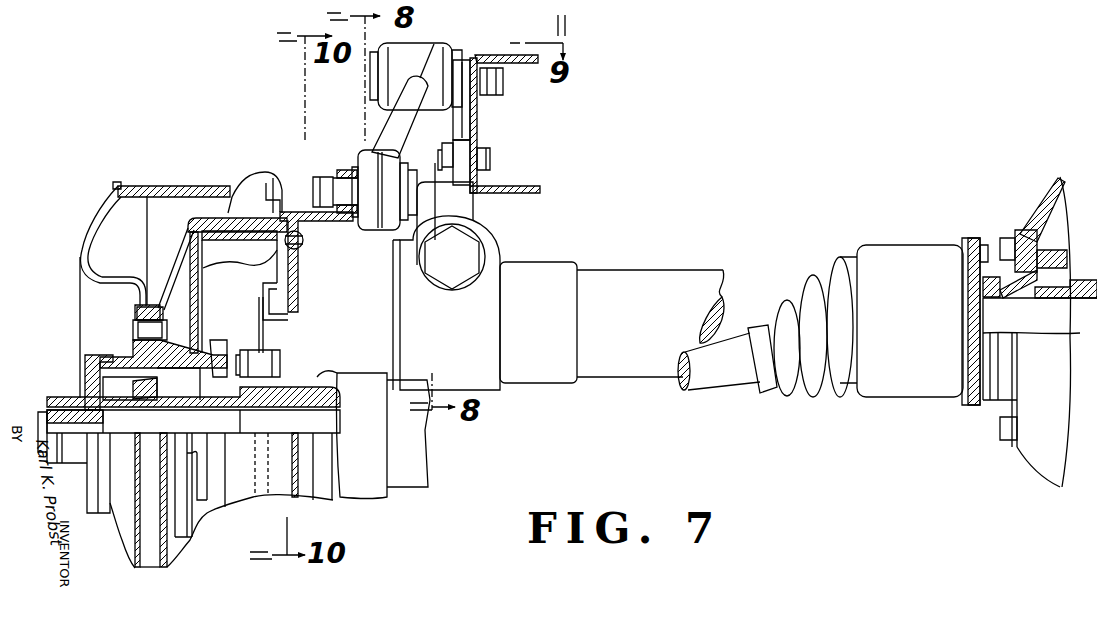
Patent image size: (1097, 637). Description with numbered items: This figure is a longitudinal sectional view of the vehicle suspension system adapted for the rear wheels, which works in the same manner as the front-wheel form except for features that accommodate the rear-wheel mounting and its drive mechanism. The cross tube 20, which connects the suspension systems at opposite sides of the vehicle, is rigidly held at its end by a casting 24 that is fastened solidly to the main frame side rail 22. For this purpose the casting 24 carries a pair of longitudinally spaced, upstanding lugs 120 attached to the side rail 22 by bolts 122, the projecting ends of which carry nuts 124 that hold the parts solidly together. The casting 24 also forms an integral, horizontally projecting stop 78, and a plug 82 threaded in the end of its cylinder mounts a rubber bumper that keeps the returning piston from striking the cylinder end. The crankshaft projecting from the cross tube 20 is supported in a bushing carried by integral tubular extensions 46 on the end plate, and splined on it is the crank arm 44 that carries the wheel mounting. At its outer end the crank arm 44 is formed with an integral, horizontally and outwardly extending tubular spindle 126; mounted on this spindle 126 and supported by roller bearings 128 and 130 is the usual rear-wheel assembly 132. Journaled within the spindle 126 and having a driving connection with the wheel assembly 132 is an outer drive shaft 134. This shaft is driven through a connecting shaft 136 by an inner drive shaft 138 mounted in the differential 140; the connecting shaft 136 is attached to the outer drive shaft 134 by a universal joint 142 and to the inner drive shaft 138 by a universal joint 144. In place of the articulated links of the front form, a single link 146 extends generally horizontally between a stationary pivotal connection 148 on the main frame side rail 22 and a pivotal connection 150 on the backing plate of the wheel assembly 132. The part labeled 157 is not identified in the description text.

The cross tube 20 is at (650, 268).
The main frame side rail 22 is at (479, 135).
The casting 24 is at (507, 243).
The crank arm 44 is at (340, 358).
The tubular extension 46 is at (375, 300).
The stop 78 is at (308, 239).
The plug 82 is at (478, 268).
The upstanding lug 120 is at (455, 150).
The bolt 122 is at (492, 158).
The nut 124 is at (438, 163).
The tubular spindle 126 is at (135, 385).
The roller bearing 128 is at (245, 380).
The roller bearing 130 is at (100, 382).
The rear-wheel assembly 132 is at (80, 268).
The outer drive shaft 134 is at (120, 428).
The connecting shaft 136 is at (724, 383).
The inner drive shaft 138 is at (985, 292).
The differential 140 is at (1045, 196).
The universal joint 142 is at (378, 498).
The universal joint 144 is at (810, 272).
The link 146 is at (395, 120).
The stationary pivotal connection 148 is at (428, 50).
The pivotal connection 150 is at (368, 172).
The seal 157 is at (297, 380).